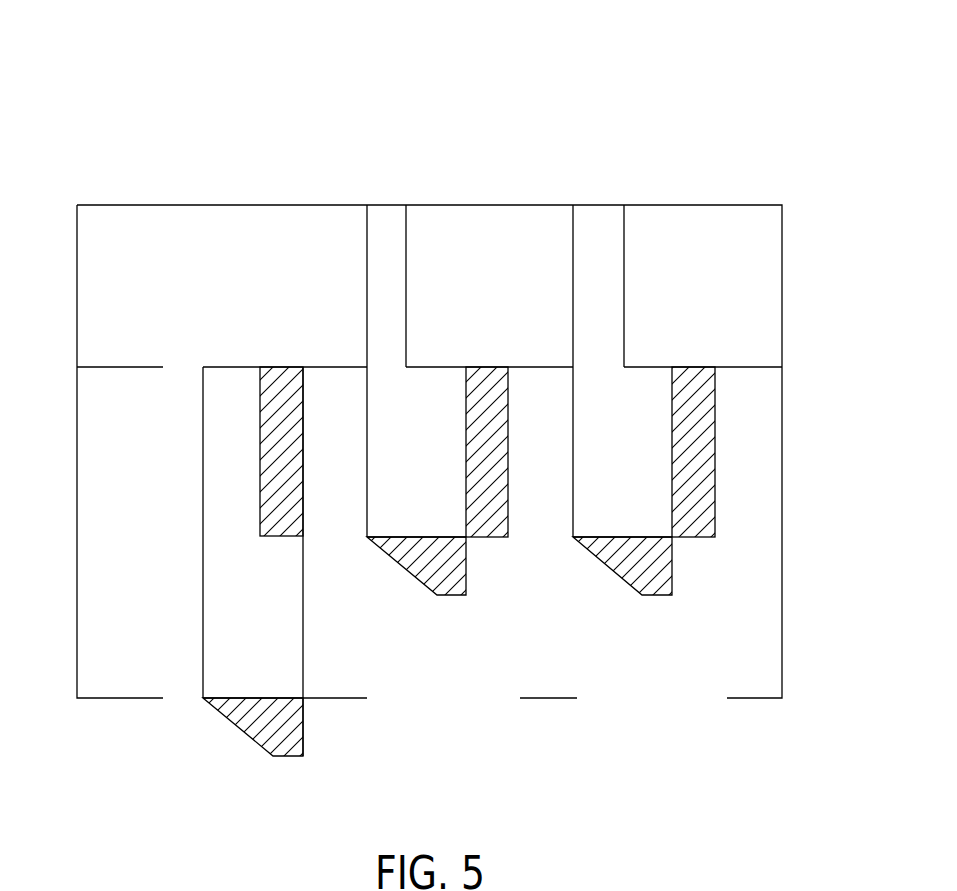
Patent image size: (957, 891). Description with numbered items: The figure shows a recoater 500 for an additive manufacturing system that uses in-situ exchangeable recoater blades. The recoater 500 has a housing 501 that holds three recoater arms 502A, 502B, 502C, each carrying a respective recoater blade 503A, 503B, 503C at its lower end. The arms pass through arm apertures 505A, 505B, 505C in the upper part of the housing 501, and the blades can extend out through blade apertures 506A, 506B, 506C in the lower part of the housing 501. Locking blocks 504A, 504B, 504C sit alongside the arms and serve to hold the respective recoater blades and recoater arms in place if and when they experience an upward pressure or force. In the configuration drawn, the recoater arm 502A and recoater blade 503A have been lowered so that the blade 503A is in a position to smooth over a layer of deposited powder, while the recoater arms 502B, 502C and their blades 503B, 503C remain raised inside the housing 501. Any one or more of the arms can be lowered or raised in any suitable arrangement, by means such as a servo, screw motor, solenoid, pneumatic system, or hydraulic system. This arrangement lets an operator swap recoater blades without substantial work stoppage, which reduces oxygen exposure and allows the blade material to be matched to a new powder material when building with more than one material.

The recoater 500 is at (722, 88).
The housing 501 is at (103, 203).
The recoater arm 502A is at (203, 548).
The recoater arm 502B is at (367, 507).
The recoater arm 502C is at (573, 507).
The recoater blade 503A is at (245, 732).
The recoater blade 503B is at (413, 575).
The recoater blade 503C is at (627, 577).
The locking block 504A is at (303, 415).
The locking block 504B is at (508, 415).
The locking block 504C is at (715, 448).
The arm aperture 505A is at (188, 367).
The arm aperture 505B is at (365, 365).
The arm aperture 505C is at (573, 365).
The blade aperture 506A is at (168, 742).
The blade aperture 506B is at (443, 742).
The blade aperture 506C is at (652, 742).